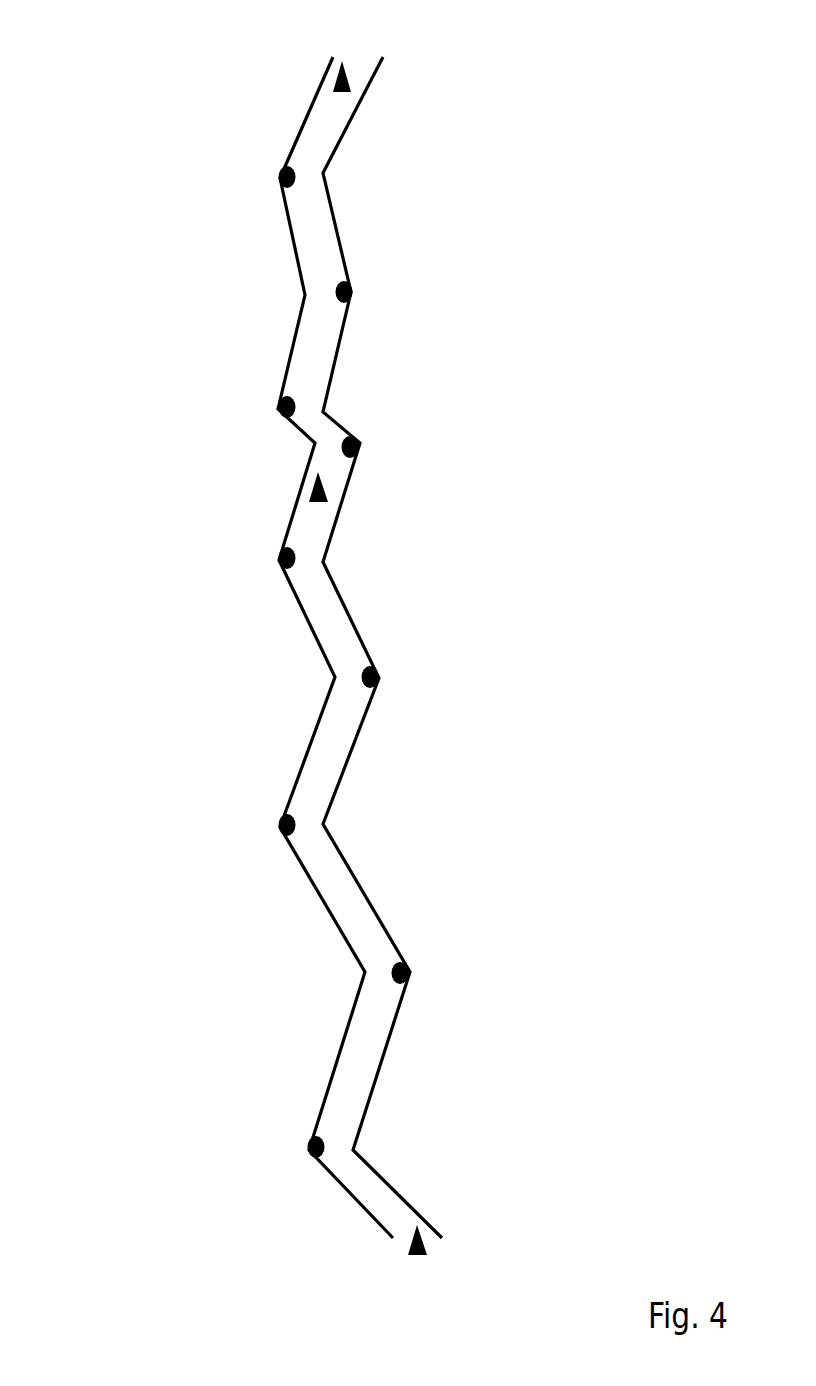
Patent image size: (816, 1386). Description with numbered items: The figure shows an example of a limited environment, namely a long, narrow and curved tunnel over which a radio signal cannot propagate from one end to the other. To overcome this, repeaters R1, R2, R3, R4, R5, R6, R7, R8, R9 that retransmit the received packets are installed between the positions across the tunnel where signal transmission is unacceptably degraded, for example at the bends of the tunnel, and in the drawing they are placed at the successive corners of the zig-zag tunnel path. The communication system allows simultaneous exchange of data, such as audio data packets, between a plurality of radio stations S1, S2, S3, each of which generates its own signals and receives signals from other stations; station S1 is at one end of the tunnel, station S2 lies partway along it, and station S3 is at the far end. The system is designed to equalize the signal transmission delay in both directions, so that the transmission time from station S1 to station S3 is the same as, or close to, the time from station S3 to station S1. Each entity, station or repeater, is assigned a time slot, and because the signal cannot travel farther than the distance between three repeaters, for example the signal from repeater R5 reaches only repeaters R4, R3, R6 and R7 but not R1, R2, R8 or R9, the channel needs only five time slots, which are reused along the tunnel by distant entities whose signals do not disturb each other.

The radio station S1 is at (210, 47).
The radio station S2 is at (199, 462).
The radio station S3 is at (248, 1202).
The repeater R1 is at (181, 150).
The repeater R2 is at (492, 256).
The repeater R3 is at (181, 382).
The repeater R4 is at (495, 408).
The repeater R5 is at (181, 533).
The repeater R6 is at (505, 640).
The repeater R7 is at (181, 801).
The repeater R8 is at (520, 943).
The repeater R9 is at (196, 1115).